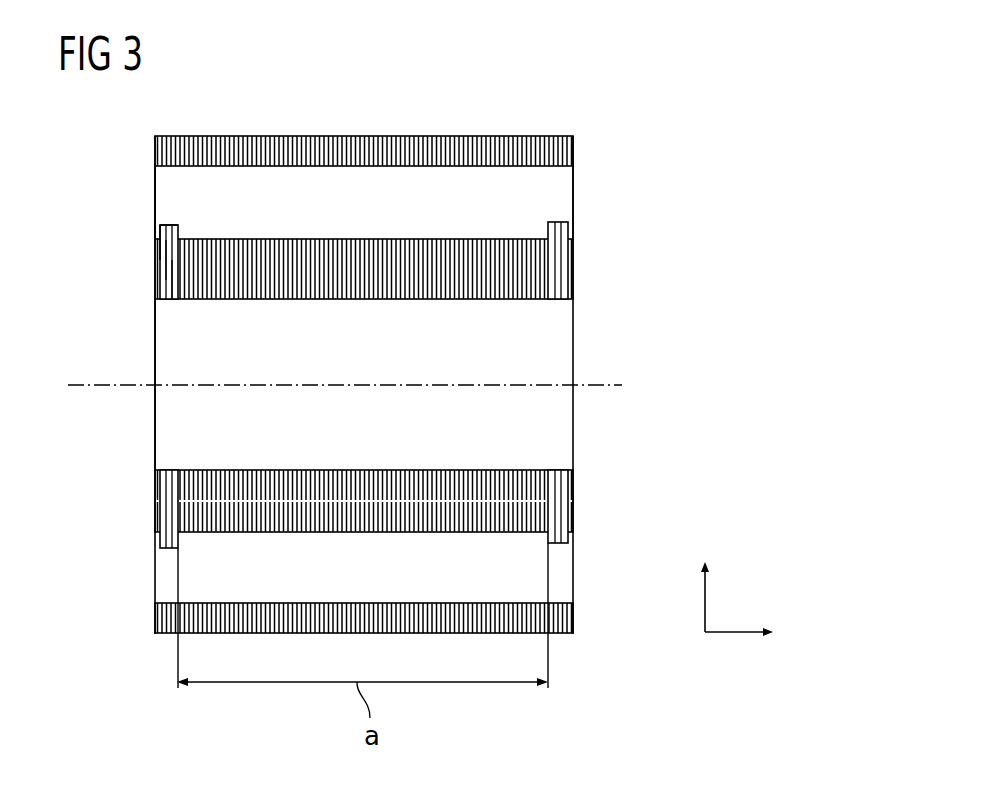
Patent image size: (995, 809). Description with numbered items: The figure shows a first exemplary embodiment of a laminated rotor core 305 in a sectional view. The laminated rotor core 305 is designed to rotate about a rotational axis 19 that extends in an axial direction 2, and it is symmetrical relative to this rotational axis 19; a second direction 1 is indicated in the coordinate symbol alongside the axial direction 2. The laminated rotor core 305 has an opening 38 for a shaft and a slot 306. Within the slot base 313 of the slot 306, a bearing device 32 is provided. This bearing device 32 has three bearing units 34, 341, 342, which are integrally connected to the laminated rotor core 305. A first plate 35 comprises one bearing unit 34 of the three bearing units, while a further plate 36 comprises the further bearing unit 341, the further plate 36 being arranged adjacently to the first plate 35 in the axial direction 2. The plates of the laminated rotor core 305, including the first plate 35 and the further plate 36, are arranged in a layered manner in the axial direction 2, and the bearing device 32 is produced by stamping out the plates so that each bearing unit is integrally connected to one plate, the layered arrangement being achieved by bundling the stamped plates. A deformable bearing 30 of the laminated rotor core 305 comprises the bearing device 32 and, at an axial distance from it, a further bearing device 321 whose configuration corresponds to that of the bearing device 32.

The laminated rotor core 305 is at (544, 112).
The deformable bearing 30 is at (471, 203).
The slot 306 is at (372, 150).
The slot base 313 is at (291, 240).
The further bearing unit 341 is at (169, 226).
The bearing unit 342 is at (182, 230).
The further bearing device 321 is at (565, 209).
The bearing device 32 is at (154, 204).
The bearing unit 34 is at (158, 232).
The first plate 35 is at (160, 262).
The further plate 36 is at (172, 290).
The rotational axis 19 is at (80, 385).
The opening 38 is at (173, 436).
The radial direction 1 is at (705, 607).
The axial direction 2 is at (728, 632).